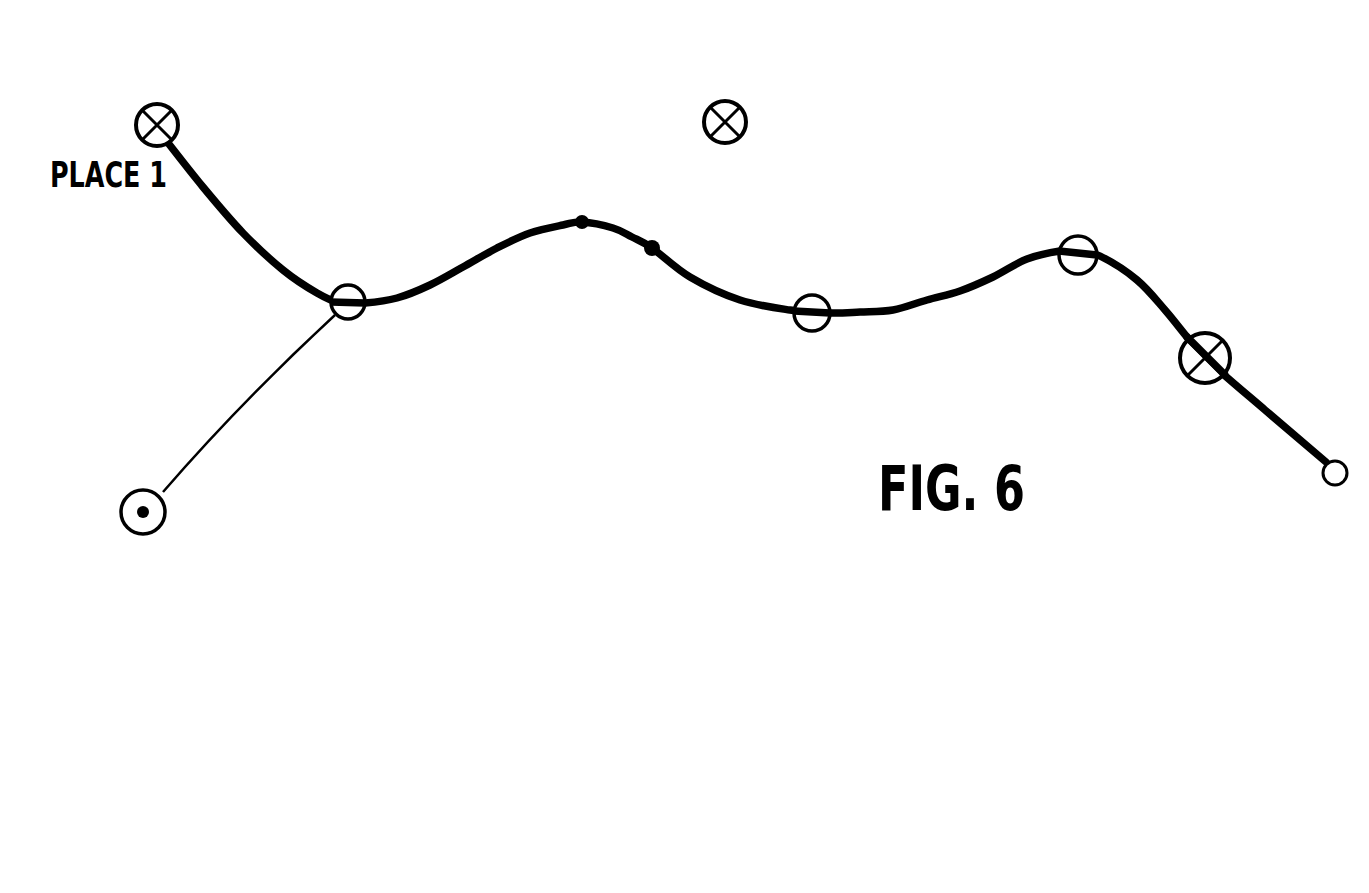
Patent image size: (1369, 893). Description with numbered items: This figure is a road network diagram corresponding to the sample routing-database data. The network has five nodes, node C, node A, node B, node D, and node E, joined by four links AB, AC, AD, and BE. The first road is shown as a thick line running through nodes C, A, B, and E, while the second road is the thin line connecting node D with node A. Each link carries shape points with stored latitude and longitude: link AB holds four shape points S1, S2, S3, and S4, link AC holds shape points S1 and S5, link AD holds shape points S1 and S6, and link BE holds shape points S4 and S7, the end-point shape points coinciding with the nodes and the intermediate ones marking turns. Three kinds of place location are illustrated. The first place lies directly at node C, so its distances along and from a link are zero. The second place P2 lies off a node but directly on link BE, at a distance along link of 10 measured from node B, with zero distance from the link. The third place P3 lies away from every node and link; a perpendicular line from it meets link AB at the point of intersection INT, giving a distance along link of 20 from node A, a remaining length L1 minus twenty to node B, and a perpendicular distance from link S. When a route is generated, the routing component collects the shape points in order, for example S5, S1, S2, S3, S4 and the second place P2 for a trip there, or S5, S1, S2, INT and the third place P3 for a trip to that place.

The node C is at (140, 123).
The node A is at (348, 279).
The node B is at (1078, 230).
The node D is at (143, 535).
The node E is at (1337, 448).
The shape point S1 is at (354, 349).
The shape point S2 is at (586, 245).
The shape point S3 is at (817, 336).
The shape point S4 is at (1081, 296).
The shape point S5 is at (210, 118).
The shape point S6 is at (194, 509).
The shape point S7 is at (1336, 509).
The point of intersection INT is at (644, 270).
The distance along link 20 is at (648, 219).
The distance along link 10 is at (1208, 323).
The link length L1 is at (675, 230).
The distance from link S is at (715, 142).
The PLACE 2 P2 is at (1270, 347).
The PLACE 3 P3 is at (762, 102).